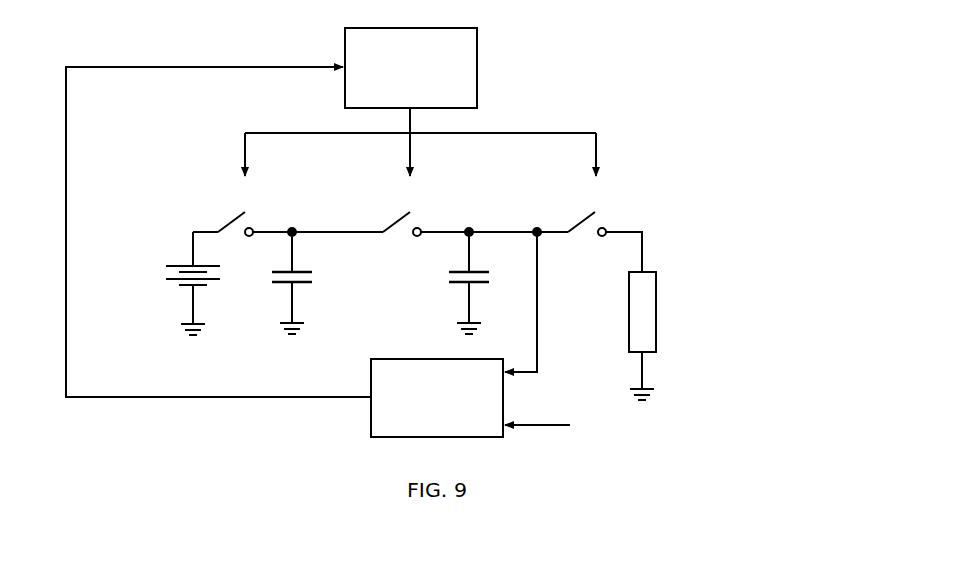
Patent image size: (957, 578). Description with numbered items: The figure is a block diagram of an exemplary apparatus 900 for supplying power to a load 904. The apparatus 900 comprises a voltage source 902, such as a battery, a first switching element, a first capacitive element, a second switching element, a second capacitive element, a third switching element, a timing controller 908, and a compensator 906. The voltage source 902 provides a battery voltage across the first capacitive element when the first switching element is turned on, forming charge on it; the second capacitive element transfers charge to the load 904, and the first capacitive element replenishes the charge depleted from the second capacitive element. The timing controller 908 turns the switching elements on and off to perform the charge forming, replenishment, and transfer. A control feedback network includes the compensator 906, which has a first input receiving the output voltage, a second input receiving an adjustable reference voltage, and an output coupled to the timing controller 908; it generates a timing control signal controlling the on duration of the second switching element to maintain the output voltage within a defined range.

The apparatus 900 is at (660, 60).
The voltage source 902 is at (181, 262).
The load 904 is at (652, 270).
The compensator 906 is at (437, 358).
The timing controller 908 is at (477, 62).